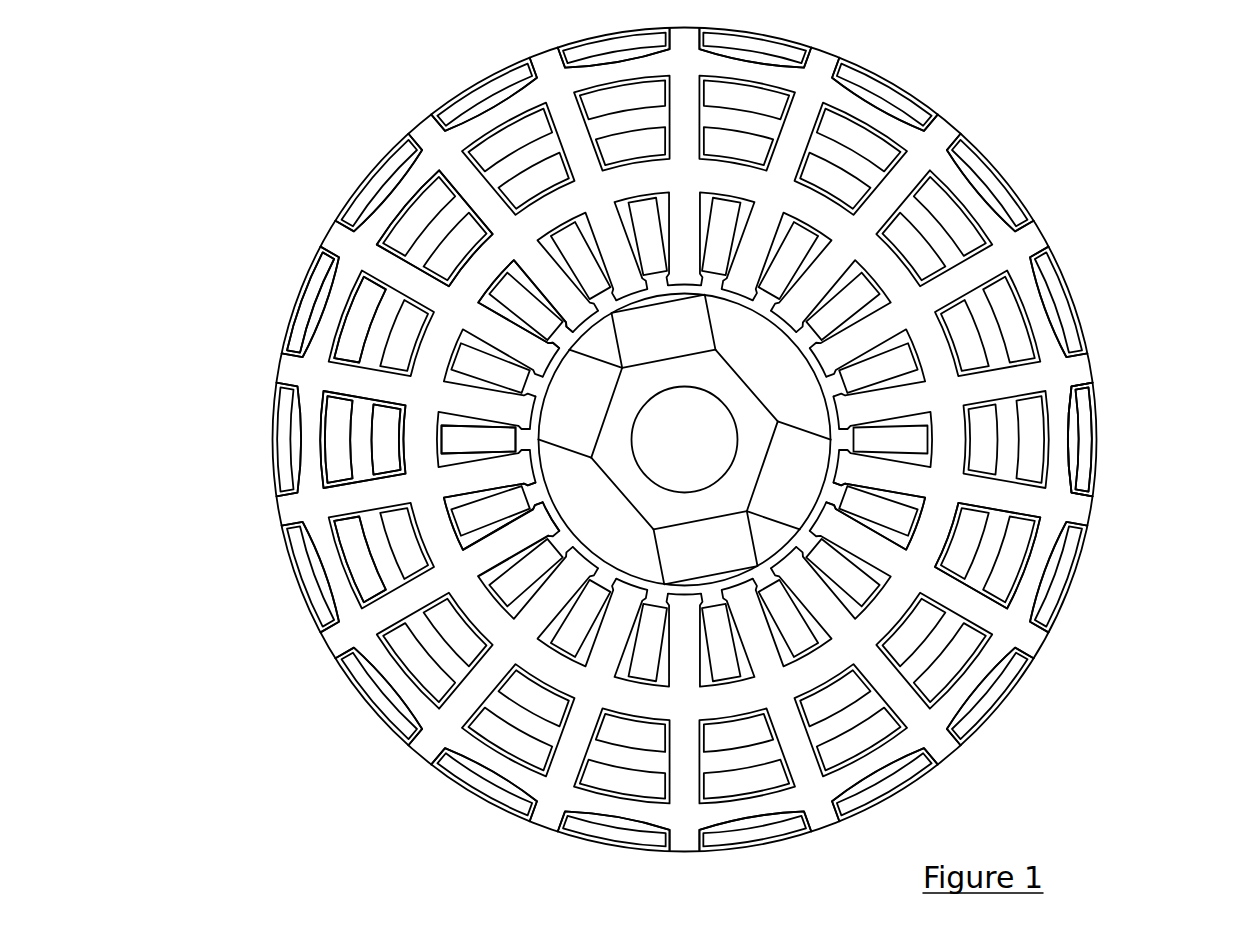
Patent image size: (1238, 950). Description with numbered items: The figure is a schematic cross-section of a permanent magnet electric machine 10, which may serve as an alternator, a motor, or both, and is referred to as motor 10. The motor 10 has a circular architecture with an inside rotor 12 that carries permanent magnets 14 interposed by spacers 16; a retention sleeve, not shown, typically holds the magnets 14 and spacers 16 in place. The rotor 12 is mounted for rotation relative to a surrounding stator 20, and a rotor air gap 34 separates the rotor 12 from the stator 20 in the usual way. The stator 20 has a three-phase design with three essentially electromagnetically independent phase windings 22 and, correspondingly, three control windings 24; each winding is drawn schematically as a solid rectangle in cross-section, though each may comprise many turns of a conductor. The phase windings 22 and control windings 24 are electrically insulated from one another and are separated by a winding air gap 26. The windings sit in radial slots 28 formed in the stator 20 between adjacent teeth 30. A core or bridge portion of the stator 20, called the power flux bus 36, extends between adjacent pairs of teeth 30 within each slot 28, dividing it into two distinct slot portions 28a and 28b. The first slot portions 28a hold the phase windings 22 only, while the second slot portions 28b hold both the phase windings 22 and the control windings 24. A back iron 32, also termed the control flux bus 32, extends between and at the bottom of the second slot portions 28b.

The permanent magnet electric machine 10 is at (1132, 103).
The rotor 12 is at (804, 334).
The permanent magnets 14 is at (805, 362).
The spacers 16 is at (831, 417).
The stator 20 is at (294, 225).
The phase winding 22 is at (482, 292).
The control winding 24 is at (332, 340).
The winding air gap 26 is at (345, 404).
The radial slots 28 is at (434, 453).
The first slot portion 28a is at (437, 495).
The second slot portion 28b is at (342, 508).
The teeth 30 is at (499, 534).
The back iron 32 is at (1083, 432).
The rotor air gap 34 is at (843, 494).
The power flux bus 36 is at (933, 554).